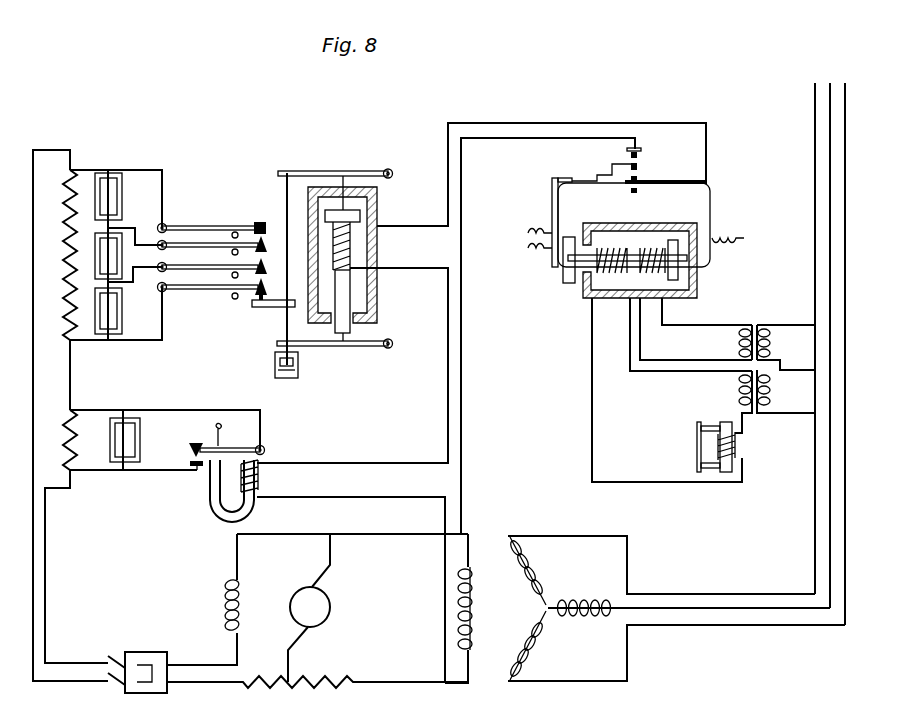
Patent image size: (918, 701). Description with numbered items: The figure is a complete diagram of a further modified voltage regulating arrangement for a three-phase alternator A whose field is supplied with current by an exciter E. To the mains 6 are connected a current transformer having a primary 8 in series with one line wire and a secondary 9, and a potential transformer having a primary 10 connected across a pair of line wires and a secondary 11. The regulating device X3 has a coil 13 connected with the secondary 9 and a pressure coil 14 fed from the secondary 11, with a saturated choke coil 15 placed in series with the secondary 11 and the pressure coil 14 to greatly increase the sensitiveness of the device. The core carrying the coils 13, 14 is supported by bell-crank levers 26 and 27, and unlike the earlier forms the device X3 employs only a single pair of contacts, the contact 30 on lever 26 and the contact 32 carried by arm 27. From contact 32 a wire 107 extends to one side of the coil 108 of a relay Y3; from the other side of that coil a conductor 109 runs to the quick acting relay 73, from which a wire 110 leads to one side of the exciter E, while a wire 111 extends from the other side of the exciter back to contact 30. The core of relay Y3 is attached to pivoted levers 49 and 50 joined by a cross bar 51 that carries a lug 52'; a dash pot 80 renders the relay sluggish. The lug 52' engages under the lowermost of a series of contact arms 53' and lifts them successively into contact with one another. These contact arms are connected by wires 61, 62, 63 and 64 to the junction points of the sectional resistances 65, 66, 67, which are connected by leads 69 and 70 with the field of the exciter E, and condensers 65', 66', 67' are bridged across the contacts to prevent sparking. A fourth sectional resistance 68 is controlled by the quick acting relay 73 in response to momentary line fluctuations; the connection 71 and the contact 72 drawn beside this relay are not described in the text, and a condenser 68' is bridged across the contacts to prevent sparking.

The mains 6 is at (845, 127).
The current transformer primary 8 is at (770, 343).
The current transformer secondary 9 is at (739, 341).
The potential transformer primary 10 is at (768, 396).
The potential transformer secondary 11 is at (739, 391).
The coil 13 is at (652, 252).
The pressure coil 14 is at (612, 252).
The saturated choke coil 15 is at (737, 447).
The bell-crank lever 26 is at (551, 207).
The bell-crank lever 27 is at (711, 206).
The contact 30 is at (638, 153).
The contact 32 is at (634, 186).
The lever 49 is at (357, 348).
The lever 50 is at (326, 172).
The cross bar 51 is at (283, 203).
The lug 52' is at (265, 319).
The contact arms 53' is at (187, 282).
The wire 61 is at (163, 192).
The wire 62 is at (158, 230).
The wire 63 is at (200, 286).
The wire 64 is at (143, 342).
The sectional resistance 65 is at (58, 198).
The condenser 65' is at (128, 196).
The sectional resistance 66 is at (58, 255).
The condenser 66' is at (131, 256).
The sectional resistance 67 is at (58, 312).
The condenser 67' is at (127, 311).
The sectional resistance 68 is at (130, 459).
The condenser 68' is at (146, 440).
The lead 69 is at (34, 540).
The lead 70 is at (46, 578).
The conductor 71 is at (150, 409).
The contact 72 is at (161, 472).
The quick acting relay 73 is at (259, 479).
The dash pot 80 is at (298, 372).
The wire 107 is at (652, 124).
The coil 108 is at (348, 252).
The conductor 109 is at (447, 359).
The wire 110 is at (395, 498).
The wire 111 is at (463, 378).
The regulating device X3 is at (634, 224).
The relay Y3 is at (364, 255).
The exciter E is at (317, 611).
The alternator A is at (645, 608).